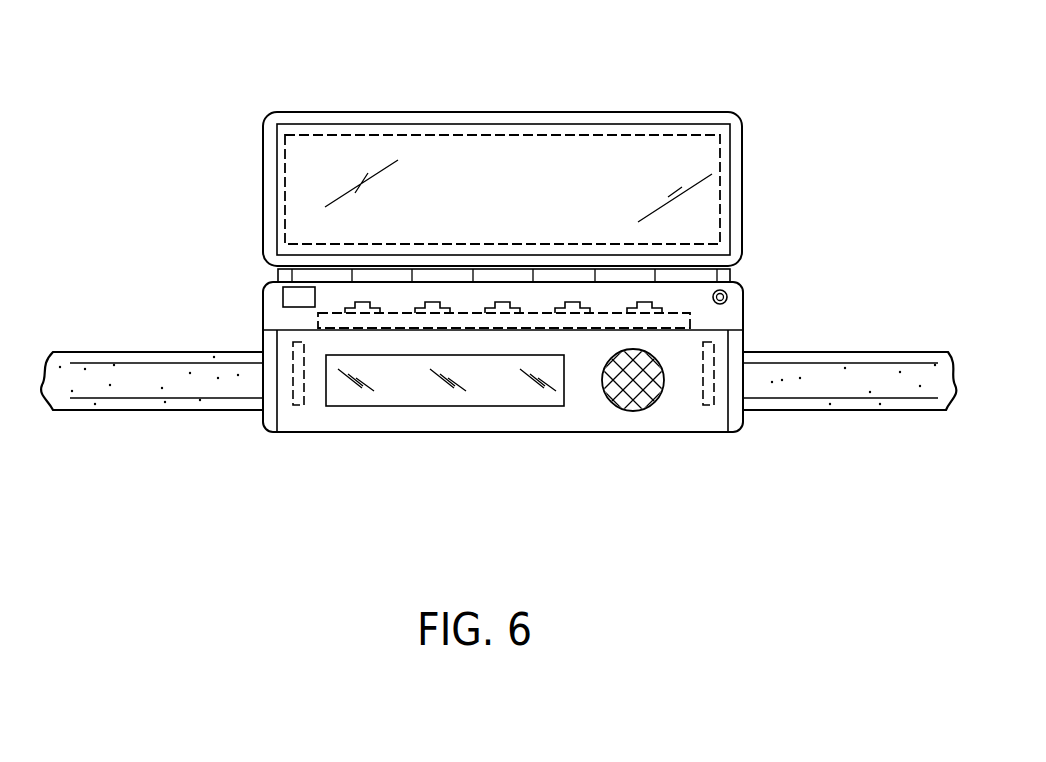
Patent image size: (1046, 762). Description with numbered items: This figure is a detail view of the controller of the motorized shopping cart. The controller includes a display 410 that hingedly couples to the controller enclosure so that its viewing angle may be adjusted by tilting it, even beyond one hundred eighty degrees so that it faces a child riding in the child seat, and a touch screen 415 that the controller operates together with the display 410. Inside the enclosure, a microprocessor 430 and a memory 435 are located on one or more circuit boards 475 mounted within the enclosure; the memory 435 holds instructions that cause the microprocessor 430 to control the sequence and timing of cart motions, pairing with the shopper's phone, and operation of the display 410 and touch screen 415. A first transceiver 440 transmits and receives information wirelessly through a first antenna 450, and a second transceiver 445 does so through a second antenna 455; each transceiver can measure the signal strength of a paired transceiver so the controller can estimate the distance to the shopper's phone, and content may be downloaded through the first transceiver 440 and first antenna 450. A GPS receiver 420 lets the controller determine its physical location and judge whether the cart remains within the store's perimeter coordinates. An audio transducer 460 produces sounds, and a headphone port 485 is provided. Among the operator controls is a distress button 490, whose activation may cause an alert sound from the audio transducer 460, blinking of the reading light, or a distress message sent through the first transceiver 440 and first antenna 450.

The display 410 is at (714, 127).
The touch screen 415 is at (722, 187).
The GPS receiver 420 is at (572, 302).
The microprocessor 430 is at (433, 302).
The memory 435 is at (505, 302).
The first transceiver 440 is at (366, 302).
The second transceiver 445 is at (645, 302).
The first antenna 450 is at (297, 405).
The second antenna 455 is at (710, 362).
The audio transducer 460 is at (636, 410).
The circuit boards 475 is at (318, 322).
The headphone port 485 is at (727, 296).
The distress button 490 is at (282, 297).